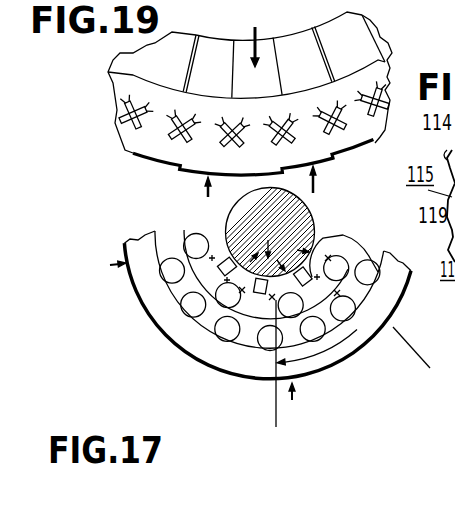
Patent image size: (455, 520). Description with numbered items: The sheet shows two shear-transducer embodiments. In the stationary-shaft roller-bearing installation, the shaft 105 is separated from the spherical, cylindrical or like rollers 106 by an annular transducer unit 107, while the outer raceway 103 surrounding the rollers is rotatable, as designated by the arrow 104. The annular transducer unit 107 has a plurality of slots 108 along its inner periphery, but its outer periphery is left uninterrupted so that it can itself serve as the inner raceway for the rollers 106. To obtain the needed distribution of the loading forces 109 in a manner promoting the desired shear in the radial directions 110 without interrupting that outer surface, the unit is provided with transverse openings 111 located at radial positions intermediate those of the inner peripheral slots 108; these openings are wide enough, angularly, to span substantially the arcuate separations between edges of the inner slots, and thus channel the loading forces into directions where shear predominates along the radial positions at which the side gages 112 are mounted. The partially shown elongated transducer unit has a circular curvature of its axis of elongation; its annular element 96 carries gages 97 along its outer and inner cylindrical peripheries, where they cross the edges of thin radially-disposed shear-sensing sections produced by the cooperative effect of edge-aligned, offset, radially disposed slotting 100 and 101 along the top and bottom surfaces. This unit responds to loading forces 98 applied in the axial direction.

In FIG. 19, the annular element 96 is at (157, 133).
In FIG. 19, the gages 97 is at (121, 113).
In FIG. 19, the loading forces 98 is at (292, 2).
In FIG. 19, the radially disposed slotting 100 is at (245, 11).
In FIG. 19, the radially disposed slotting 101 is at (163, 170).
In FIG. 17, the outer raceway 103 is at (398, 316).
In FIG. 17, the arrow 104 is at (310, 366).
In FIG. 17, the shaft 105 is at (294, 234).
In FIG. 17, the rollers 106 is at (175, 270).
In FIG. 17, the annular transducer unit 107 is at (222, 302).
In FIG. 17, the slots 108 is at (382, 217).
In FIG. 17, the loading forces 109 is at (224, 238).
In FIG. 17, the radial directions 110 is at (274, 408).
In FIG. 17, the transverse openings 111 is at (403, 246).
In FIG. 17, the side gages 112 is at (322, 357).